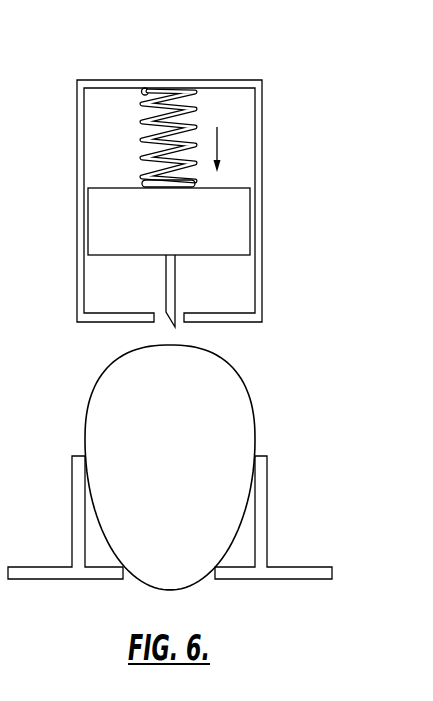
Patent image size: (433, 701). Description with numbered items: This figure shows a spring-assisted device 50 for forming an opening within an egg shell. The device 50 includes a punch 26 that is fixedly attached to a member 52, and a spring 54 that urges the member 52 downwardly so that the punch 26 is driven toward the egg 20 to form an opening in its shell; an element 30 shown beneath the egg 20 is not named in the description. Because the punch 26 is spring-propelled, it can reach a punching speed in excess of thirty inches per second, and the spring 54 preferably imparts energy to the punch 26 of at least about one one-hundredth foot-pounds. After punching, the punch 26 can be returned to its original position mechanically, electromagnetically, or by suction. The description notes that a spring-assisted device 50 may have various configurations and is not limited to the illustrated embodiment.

The spring-assisted device 50 is at (258, 55).
The spring 54 is at (193, 108).
The member 52 is at (230, 195).
The punch 26 is at (176, 293).
The egg 20 is at (250, 402).
The egg holder 30 is at (267, 499).